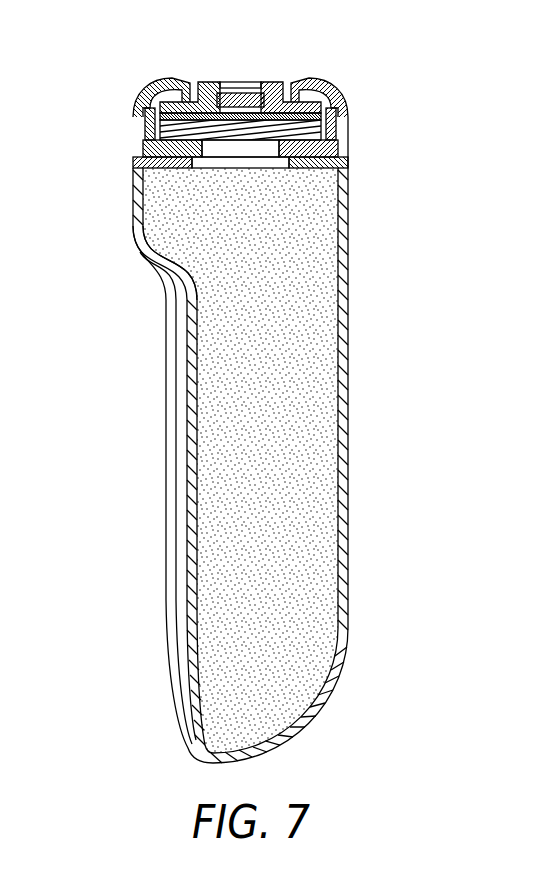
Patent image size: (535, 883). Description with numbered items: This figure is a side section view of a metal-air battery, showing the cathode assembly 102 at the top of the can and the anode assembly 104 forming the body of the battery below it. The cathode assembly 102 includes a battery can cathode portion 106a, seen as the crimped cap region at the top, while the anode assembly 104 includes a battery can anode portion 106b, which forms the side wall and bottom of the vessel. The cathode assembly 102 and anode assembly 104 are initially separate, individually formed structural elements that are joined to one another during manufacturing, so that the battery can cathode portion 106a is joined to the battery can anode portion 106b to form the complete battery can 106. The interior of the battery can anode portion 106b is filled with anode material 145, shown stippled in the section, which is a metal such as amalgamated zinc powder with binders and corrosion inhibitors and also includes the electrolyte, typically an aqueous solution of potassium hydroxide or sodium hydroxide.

The cathode assembly 102 is at (235, 393).
The anode assembly 104 is at (125, 229).
The battery can 106 is at (289, 428).
The battery can cathode portion 106a is at (334, 90).
The battery can anode portion 106b is at (349, 420).
The anode material 145 is at (295, 450).